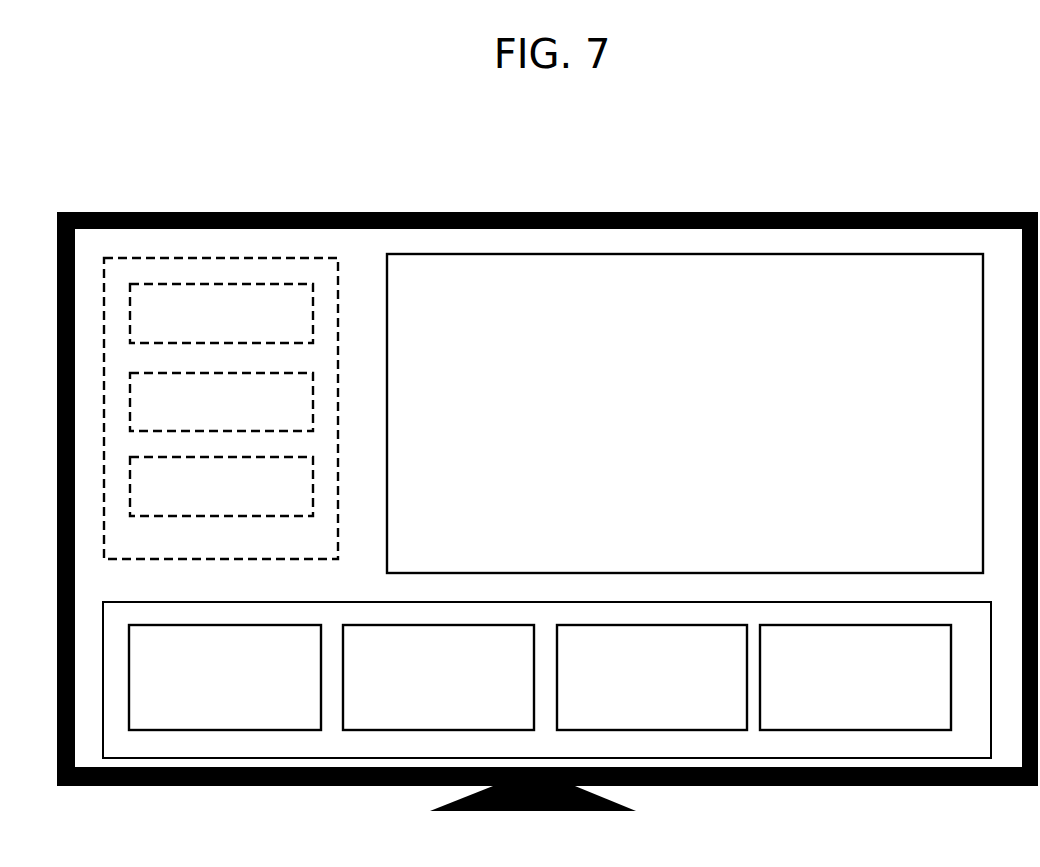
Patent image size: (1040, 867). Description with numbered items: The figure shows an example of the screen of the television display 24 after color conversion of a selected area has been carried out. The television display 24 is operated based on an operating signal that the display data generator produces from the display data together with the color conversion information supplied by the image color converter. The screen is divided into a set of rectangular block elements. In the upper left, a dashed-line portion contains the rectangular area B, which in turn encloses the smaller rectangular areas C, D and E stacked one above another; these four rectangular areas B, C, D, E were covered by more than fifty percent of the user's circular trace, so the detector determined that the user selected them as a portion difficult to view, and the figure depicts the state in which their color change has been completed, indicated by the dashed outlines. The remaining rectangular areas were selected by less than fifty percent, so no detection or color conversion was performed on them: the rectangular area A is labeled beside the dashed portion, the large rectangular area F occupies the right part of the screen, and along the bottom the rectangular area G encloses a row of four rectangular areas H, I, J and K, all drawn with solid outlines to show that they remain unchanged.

The television display 24 is at (932, 212).
The rectangular area A is at (362, 279).
The rectangular area B is at (221, 408).
The rectangular area C is at (221, 313).
The rectangular area D is at (221, 402).
The rectangular area E is at (221, 486).
The rectangular area F is at (685, 413).
The rectangular area G is at (547, 680).
The rectangular area H is at (225, 677).
The rectangular area I is at (438, 677).
The rectangular area J is at (652, 677).
The rectangular area K is at (855, 677).